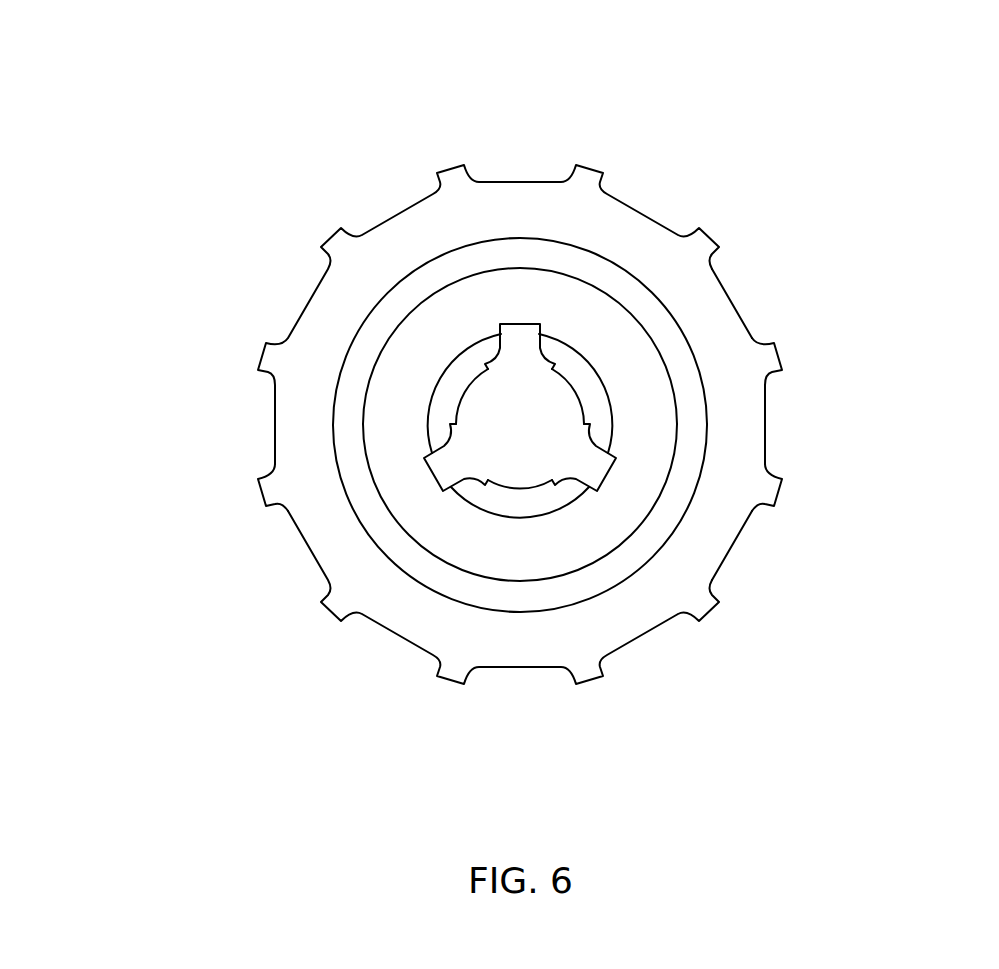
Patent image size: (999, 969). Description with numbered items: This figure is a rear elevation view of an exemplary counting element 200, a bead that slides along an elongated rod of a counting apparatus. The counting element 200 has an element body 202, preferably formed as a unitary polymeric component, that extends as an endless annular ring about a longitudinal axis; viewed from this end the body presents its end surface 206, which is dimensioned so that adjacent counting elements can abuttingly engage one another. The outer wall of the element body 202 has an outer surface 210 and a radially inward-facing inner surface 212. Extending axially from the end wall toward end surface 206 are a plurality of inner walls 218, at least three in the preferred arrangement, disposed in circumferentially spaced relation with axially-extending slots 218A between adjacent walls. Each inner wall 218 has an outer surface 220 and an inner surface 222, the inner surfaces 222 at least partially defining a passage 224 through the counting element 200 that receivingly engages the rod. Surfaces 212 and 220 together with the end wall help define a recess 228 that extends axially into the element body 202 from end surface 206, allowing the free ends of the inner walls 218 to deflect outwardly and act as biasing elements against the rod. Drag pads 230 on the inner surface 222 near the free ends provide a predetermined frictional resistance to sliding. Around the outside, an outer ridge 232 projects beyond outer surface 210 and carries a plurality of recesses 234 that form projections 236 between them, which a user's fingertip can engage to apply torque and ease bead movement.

The counting element 200 is at (833, 163).
The element body 202 is at (497, 246).
The end surface 206 is at (363, 353).
The outer surface 210 is at (603, 257).
The inner surface 212 is at (630, 314).
The inner walls 218 is at (453, 387).
The axially-extending slots 218A is at (440, 467).
The outer surface 220 is at (480, 505).
The inner surface 222 is at (478, 478).
The passage 224 is at (498, 412).
The recess 228 is at (566, 300).
The drag pads 230 is at (538, 484).
The outer ridge 232 is at (736, 418).
The recesses 234 is at (751, 318).
The projections 236 is at (770, 492).